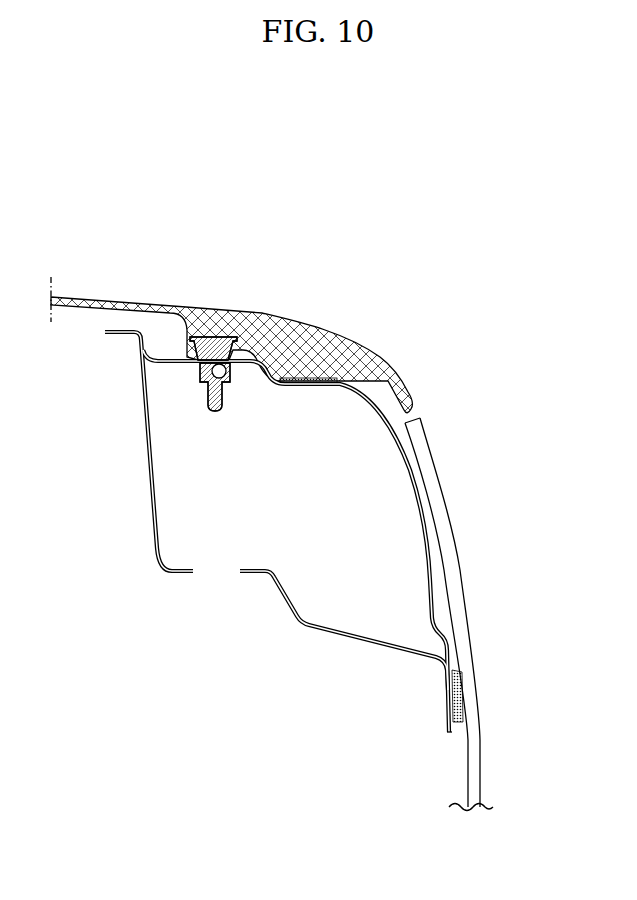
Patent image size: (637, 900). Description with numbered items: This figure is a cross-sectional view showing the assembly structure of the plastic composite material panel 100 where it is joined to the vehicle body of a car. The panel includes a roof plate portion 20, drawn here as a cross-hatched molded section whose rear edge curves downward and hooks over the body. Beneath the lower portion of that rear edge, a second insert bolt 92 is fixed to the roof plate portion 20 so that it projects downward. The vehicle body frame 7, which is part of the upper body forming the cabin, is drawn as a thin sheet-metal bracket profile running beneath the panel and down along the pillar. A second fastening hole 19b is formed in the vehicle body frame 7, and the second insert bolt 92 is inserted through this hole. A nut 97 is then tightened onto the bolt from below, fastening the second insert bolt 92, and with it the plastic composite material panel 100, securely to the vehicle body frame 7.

The plastic composite material panel 100 is at (292, 178).
The roof plate portion 20 is at (202, 304).
The second insert bolt 92 is at (222, 343).
The vehicle body frame 7 is at (138, 360).
The nut 97 is at (205, 381).
The second fastening hole 19b is at (223, 387).